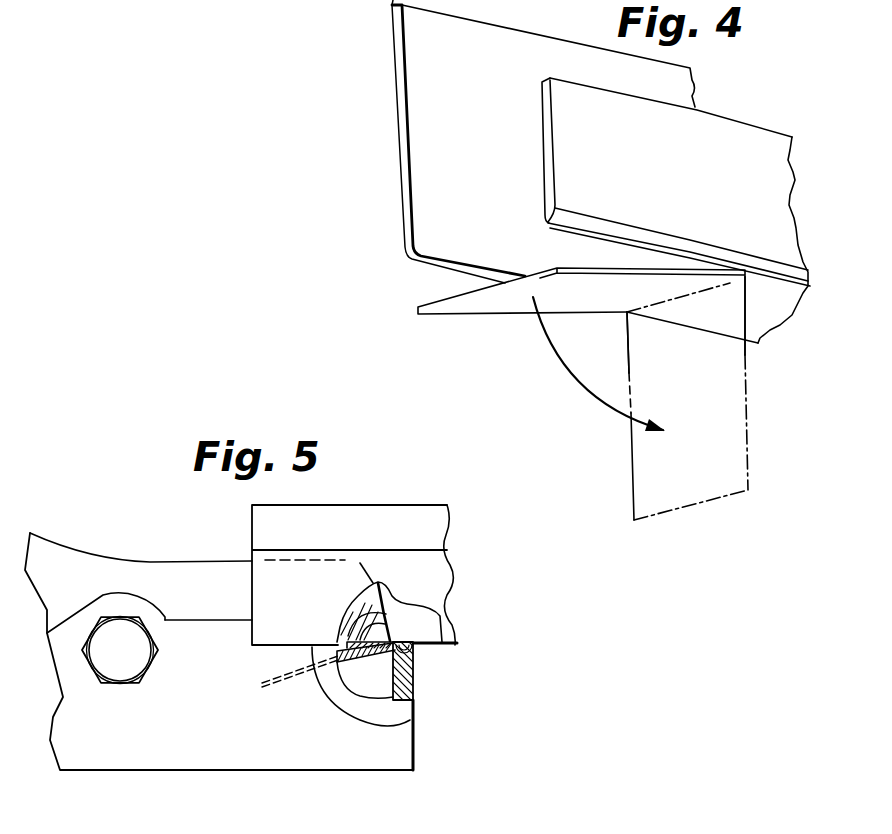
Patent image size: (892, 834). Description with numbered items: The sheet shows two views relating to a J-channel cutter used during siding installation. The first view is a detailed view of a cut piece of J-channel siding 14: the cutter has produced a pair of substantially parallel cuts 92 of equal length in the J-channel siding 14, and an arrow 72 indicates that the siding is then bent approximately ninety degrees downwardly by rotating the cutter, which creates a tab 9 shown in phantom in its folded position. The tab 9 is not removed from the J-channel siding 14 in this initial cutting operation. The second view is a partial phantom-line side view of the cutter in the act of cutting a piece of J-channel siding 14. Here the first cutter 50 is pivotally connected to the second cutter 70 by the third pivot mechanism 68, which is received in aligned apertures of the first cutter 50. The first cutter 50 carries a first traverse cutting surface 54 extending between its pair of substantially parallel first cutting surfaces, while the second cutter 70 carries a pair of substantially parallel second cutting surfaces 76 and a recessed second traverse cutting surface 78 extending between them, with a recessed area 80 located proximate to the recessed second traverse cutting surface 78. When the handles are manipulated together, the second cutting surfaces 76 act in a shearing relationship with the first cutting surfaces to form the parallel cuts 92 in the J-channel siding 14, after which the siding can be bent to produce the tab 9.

In FIG. 4, the J-channel siding 14 is at (662, 182).
In FIG. 5, the J-channel siding 14 is at (387, 515).
In FIG. 4, the arrow 72 is at (557, 350).
In FIG. 4, the tab 9 is at (703, 417).
In FIG. 5, the tab 9 is at (312, 655).
In FIG. 4, the substantially parallel cuts 92 is at (630, 450).
In FIG. 5, the third pivot mechanism 68 is at (120, 633).
In FIG. 5, the second cutter 70 is at (205, 572).
In FIG. 5, the recessed area 80 is at (380, 614).
In FIG. 5, the recessed second traverse cutting surface 78 is at (400, 637).
In FIG. 5, the first traverse cutting surface 54 is at (413, 661).
In FIG. 5, the second cutting surfaces 76 is at (410, 720).
In FIG. 5, the first cutter 50 is at (193, 728).